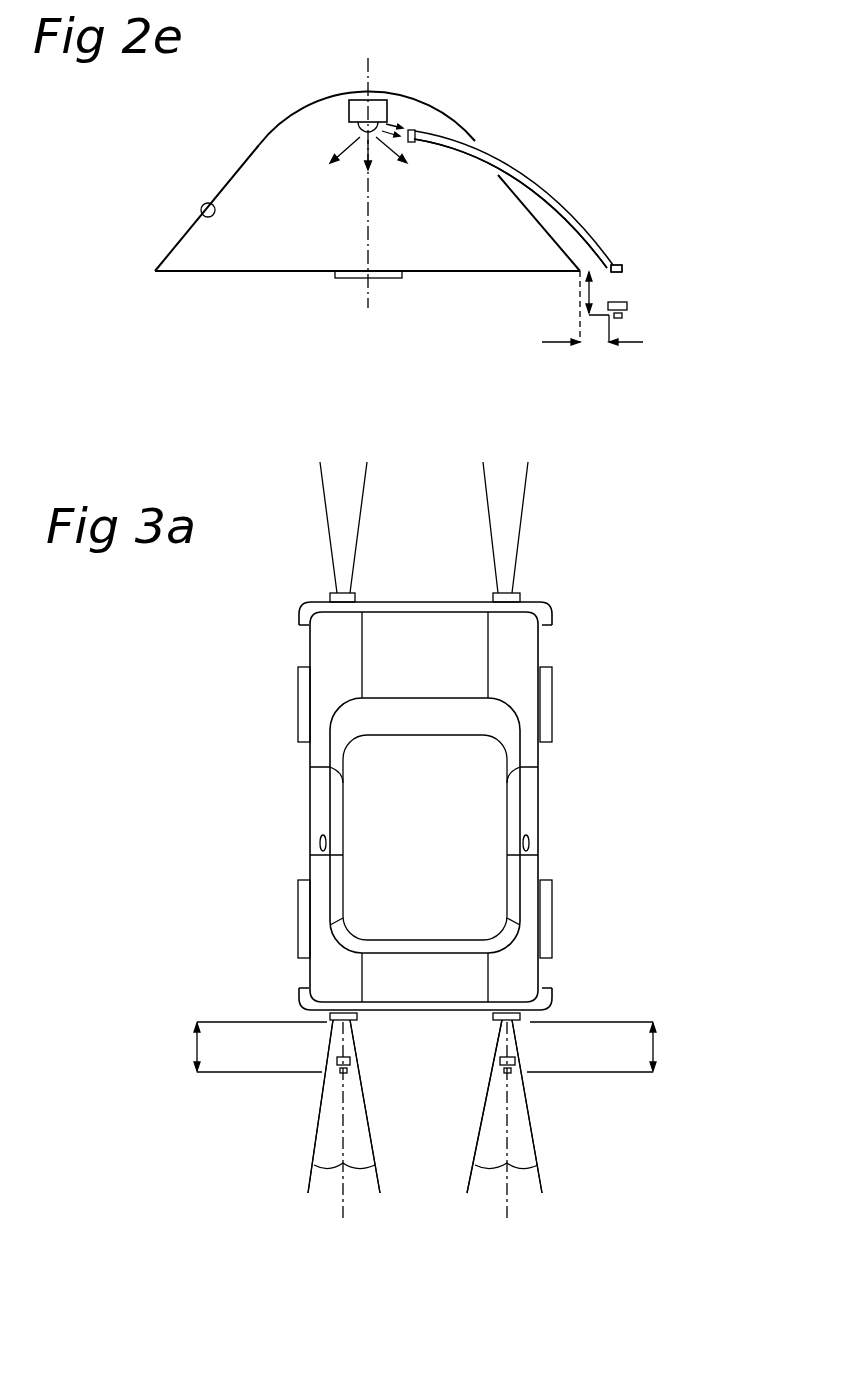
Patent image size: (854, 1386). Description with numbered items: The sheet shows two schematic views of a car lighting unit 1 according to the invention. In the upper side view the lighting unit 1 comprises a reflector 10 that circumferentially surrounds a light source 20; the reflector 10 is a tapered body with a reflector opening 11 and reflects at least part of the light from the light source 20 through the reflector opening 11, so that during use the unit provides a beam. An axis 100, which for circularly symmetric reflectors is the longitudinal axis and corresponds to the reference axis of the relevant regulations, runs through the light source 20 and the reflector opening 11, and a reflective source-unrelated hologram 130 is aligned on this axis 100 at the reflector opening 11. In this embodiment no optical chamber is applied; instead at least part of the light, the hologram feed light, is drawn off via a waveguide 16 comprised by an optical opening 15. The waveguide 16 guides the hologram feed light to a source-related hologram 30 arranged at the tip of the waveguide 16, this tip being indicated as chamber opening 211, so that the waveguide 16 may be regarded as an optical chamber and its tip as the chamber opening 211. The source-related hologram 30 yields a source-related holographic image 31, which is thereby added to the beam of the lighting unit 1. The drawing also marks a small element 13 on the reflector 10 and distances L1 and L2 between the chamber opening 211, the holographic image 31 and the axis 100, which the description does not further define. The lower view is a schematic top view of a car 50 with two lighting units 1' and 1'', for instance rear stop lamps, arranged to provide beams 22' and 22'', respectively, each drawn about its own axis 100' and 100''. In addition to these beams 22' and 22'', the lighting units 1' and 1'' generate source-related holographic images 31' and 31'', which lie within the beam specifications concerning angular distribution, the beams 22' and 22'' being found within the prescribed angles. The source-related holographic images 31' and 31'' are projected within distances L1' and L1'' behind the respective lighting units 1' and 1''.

In FIG. 2E, the car lighting unit 1 is at (367, 173).
In FIG. 2E, the reflector 10 is at (302, 107).
In FIG. 2E, the reflector opening 11 is at (485, 272).
In FIG. 2E, the hinge 13 is at (203, 213).
In FIG. 2E, the reflective source-unrelated hologram 130 is at (383, 277).
In FIG. 2E, the axis 100 is at (334, 201).
In FIG. 2E, the light source 20 is at (378, 105).
In FIG. 2E, the optical opening 15 is at (488, 142).
In FIG. 2E, the waveguide 16 is at (527, 176).
In FIG. 2E, the chamber opening 211 is at (620, 263).
In FIG. 2E, the source-related hologram 30 is at (620, 277).
In FIG. 2E, the source-related holographic image 31 is at (671, 325).
In FIG. 2E, the distance L1 is at (580, 306).
In FIG. 2E, the distance L2 is at (592, 353).
In FIG. 3A, the car 50 is at (571, 799).
In FIG. 3A, the lighting unit 1' is at (313, 1041).
In FIG. 3A, the lighting unit 1'' is at (544, 1037).
In FIG. 3A, the beam 22' is at (313, 1106).
In FIG. 3A, the beam 22'' is at (535, 1106).
In FIG. 3A, the left optical axis 100' is at (377, 1121).
In FIG. 3A, the right optical axis 100'' is at (543, 1121).
In FIG. 3A, the source-related holographic image 31' is at (298, 1085).
In FIG. 3A, the source-related holographic image 31'' is at (479, 1074).
In FIG. 3A, the distance L1' is at (243, 1047).
In FIG. 3A, the distance L1'' is at (608, 1047).